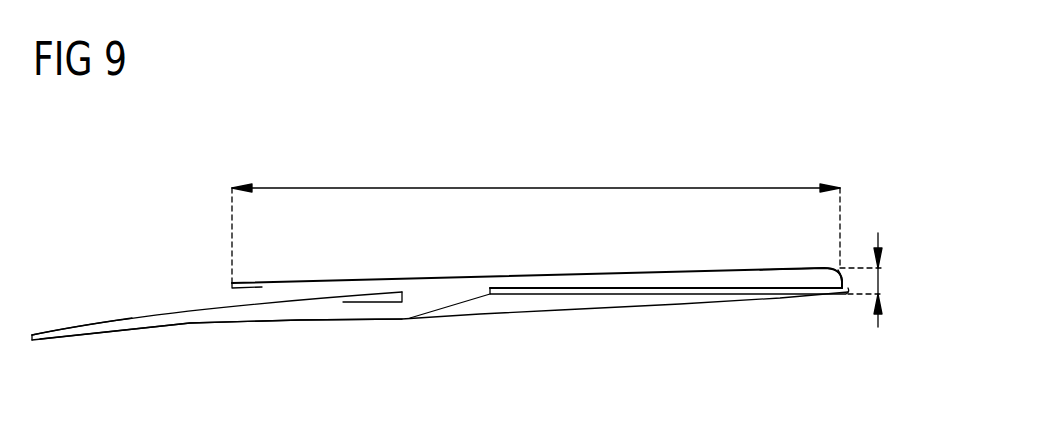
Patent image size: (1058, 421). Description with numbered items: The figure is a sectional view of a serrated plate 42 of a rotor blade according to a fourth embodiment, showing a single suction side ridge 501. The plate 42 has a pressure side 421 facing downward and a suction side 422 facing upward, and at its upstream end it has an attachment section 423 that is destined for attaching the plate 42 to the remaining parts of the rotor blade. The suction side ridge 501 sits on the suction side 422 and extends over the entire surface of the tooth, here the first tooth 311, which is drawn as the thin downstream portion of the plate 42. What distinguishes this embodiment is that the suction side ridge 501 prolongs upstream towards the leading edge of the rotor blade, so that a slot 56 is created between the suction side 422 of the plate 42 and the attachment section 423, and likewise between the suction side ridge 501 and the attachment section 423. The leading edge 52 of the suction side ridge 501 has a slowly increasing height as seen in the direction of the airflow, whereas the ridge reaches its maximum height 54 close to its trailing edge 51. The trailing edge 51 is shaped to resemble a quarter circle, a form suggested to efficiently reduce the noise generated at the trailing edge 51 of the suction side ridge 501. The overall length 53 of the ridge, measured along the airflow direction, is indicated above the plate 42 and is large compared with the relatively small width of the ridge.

The plate 42 is at (471, 150).
The pressure side 421 is at (235, 323).
The suction side 422 is at (650, 287).
The attachment section 423 is at (132, 318).
The leading edge 52 is at (247, 288).
The slot 56 is at (348, 301).
The first tooth 311 is at (603, 296).
The suction side ridge 501 is at (787, 280).
The trailing edge 51 is at (837, 268).
The length 53 is at (537, 188).
The maximum height 54 is at (878, 283).